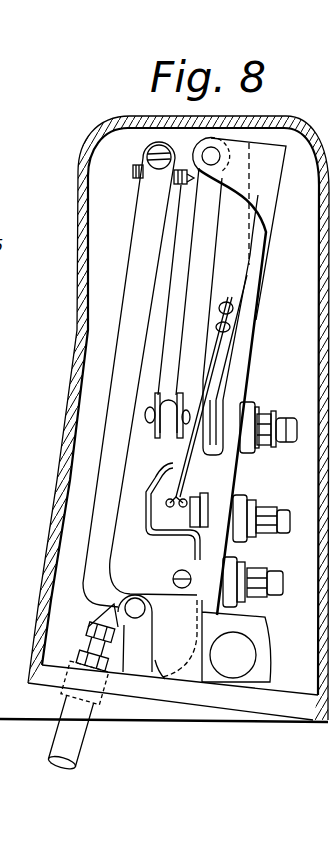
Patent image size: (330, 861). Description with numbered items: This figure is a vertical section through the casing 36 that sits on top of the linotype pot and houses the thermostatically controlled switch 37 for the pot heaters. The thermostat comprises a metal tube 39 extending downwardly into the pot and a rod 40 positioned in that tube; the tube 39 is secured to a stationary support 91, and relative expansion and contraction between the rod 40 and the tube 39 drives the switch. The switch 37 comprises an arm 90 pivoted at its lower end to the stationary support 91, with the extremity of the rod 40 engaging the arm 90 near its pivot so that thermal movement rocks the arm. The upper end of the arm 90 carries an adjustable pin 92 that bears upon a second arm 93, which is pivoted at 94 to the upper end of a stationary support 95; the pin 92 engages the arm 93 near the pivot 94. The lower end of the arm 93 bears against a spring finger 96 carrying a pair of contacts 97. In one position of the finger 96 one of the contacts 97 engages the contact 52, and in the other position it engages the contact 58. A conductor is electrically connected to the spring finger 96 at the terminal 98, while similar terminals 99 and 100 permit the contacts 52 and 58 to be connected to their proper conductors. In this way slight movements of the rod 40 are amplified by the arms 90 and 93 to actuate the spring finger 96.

The casing 36 is at (320, 348).
The thermostatically controlled switch 37 is at (258, 229).
The metal tube 39 is at (80, 749).
The rod 40 is at (88, 637).
The contact 52 is at (152, 488).
The contact 58 is at (195, 496).
The arm 90 is at (108, 454).
The stationary support 91 is at (148, 655).
The adjustable pin 92 is at (141, 170).
The arm 93 is at (194, 236).
The pivot 94 is at (214, 160).
The stationary support 95 is at (262, 258).
The spring finger 96 is at (207, 372).
The contacts 97 is at (172, 515).
The terminal 98 is at (263, 410).
The terminal 99 is at (244, 500).
The terminal 100 is at (238, 564).